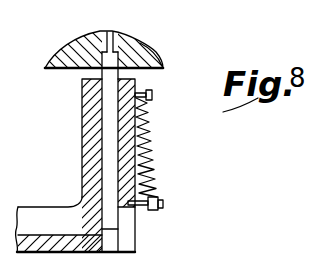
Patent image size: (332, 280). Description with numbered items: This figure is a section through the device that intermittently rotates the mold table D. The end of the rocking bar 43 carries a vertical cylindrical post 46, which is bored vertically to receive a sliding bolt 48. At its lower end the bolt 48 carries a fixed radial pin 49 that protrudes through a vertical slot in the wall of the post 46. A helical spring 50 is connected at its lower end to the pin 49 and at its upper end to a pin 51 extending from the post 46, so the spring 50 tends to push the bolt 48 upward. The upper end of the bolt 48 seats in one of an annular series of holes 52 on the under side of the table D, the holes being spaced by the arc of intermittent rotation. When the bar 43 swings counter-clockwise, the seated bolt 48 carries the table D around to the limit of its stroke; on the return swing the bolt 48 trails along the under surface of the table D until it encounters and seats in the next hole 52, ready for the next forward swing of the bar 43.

The rocking bar 43 is at (43, 207).
The vertical cylindrical post 46 is at (88, 86).
The sliding bolt 48 is at (110, 106).
The fixed radial pin 49 is at (136, 212).
The helical spring 50 is at (147, 155).
The pin 51 is at (152, 95).
The holes 52 is at (140, 42).
The mold table D is at (154, 50).